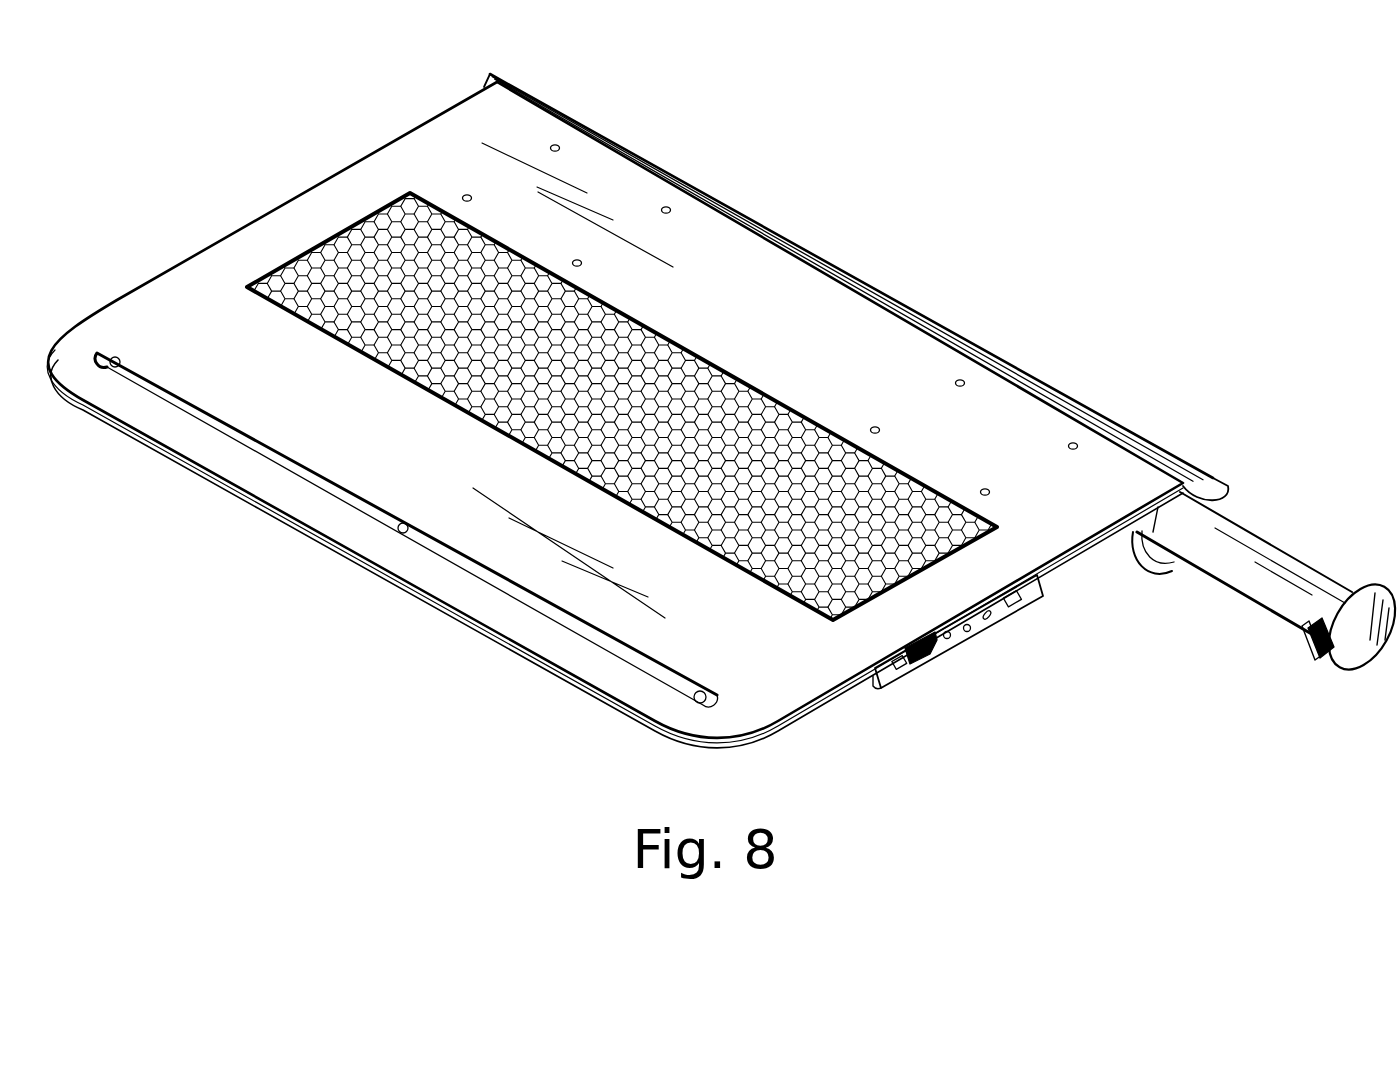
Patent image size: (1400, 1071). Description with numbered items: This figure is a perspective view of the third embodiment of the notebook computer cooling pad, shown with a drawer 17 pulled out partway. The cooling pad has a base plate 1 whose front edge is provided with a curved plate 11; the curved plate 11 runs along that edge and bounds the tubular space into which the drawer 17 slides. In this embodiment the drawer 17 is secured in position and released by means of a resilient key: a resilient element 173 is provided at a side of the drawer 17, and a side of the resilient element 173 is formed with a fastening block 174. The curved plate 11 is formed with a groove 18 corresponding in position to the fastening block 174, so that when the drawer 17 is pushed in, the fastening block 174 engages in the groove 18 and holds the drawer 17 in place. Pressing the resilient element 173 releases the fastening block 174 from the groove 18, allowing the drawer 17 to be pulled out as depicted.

The base plate 1 is at (257, 228).
The curved plate 11 is at (877, 280).
The drawer 17 is at (1353, 650).
The resilient element 173 is at (1315, 655).
The fastening block 174 is at (1307, 640).
The groove 18 is at (1131, 534).